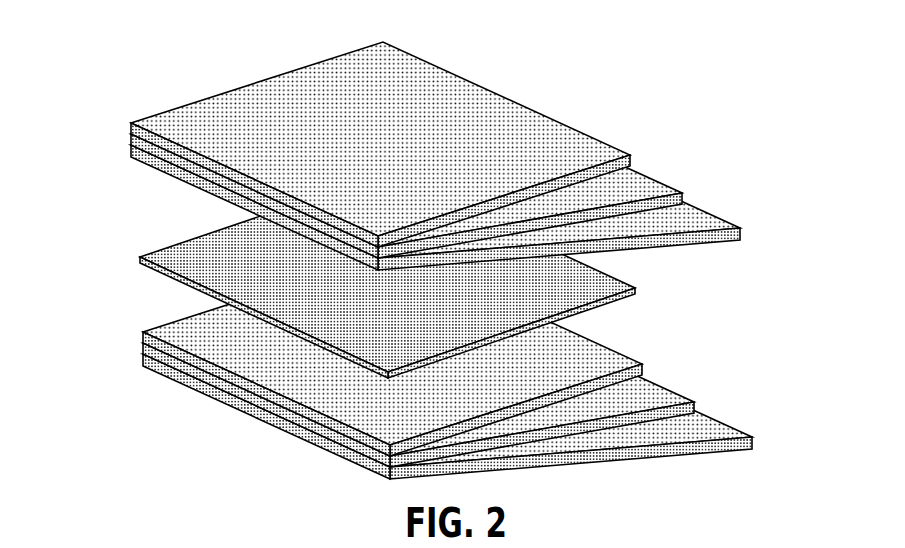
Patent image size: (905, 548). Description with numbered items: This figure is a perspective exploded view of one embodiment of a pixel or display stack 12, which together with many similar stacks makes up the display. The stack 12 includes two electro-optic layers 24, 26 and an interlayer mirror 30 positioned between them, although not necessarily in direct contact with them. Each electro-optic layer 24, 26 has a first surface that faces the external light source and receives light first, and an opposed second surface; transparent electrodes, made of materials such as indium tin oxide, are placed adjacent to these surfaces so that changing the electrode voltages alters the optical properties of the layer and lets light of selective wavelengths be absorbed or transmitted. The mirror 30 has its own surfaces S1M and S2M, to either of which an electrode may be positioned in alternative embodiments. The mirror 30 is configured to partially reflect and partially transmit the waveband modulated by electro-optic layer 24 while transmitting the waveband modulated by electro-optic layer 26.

The display stack 12 is at (225, 56).
The electro-optic layer 24 is at (427, 183).
The electro-optic layer 26 is at (436, 403).
The interlayer mirror 30 is at (370, 275).
The mirror first surface S1M is at (207, 247).
The mirror second surface S2M is at (338, 317).